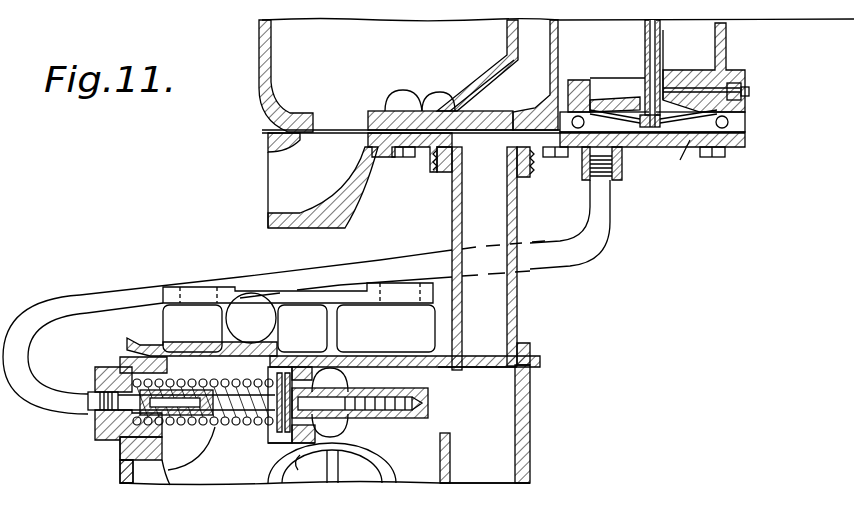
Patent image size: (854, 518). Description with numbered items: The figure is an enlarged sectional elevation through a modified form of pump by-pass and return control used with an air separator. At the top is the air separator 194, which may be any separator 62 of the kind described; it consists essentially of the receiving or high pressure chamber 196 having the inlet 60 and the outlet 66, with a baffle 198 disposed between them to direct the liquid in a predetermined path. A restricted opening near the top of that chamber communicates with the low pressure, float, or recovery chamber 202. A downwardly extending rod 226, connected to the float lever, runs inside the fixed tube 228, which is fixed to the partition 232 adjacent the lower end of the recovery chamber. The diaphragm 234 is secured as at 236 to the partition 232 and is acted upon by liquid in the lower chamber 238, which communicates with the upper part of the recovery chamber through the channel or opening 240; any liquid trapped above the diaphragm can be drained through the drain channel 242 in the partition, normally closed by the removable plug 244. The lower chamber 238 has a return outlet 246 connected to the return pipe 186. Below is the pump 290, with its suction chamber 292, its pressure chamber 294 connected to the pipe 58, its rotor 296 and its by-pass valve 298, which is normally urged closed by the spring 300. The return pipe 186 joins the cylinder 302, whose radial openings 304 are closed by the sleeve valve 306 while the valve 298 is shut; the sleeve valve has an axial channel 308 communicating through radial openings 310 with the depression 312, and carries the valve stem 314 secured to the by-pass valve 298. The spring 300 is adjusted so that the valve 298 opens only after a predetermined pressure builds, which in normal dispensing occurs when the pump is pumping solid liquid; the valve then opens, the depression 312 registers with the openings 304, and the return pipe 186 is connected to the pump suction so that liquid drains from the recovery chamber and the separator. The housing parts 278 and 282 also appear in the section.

The pipe 58 is at (515, 326).
The inlet 60 is at (445, 175).
The air separator 62 is at (266, 98).
The outlet 66 is at (340, 192).
The return pipe 186 is at (78, 302).
The air separator 194 is at (712, 58).
The receiving or high pressure chamber 196 is at (272, 40).
The baffle 198 is at (486, 72).
The low pressure, float, or recovery chamber 202 is at (712, 40).
The rod 226 is at (657, 62).
The fixed tube 228 is at (662, 30).
The partition 232 is at (672, 100).
The diaphragm 234 is at (680, 135).
The securing point of diaphragm 236 is at (728, 118).
The lower chamber 238 is at (700, 152).
The channel or opening 240 is at (562, 95).
The drain channel 242 is at (712, 82).
The removable plug 244 is at (752, 84).
The return outlet 246 is at (620, 180).
The housing 278 is at (497, 500).
The rib 282 is at (451, 475).
The pump 290 is at (530, 436).
The suction chamber 292 is at (117, 472).
The pressure chamber 294 is at (520, 400).
The rotor 296 is at (303, 478).
The by-pass valve 298 is at (262, 462).
The spring 300 is at (190, 470).
The cylinder 302 is at (97, 432).
The radial openings 304 is at (175, 378).
The sleeve valve 306 is at (275, 365).
The axial channel 308 is at (216, 395).
The radial openings 310 is at (190, 416).
The depression 312 is at (198, 378).
The valve stem 314 is at (262, 420).